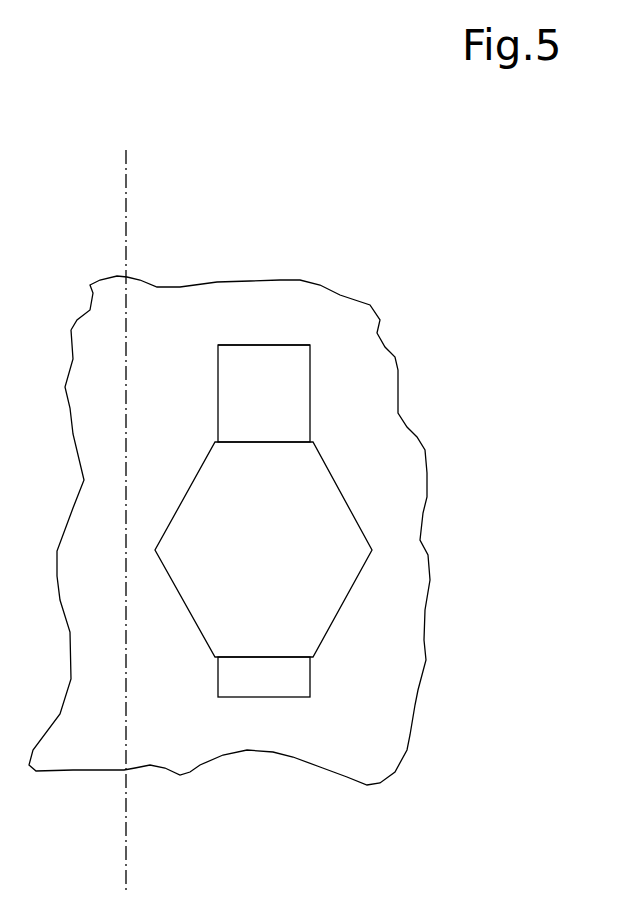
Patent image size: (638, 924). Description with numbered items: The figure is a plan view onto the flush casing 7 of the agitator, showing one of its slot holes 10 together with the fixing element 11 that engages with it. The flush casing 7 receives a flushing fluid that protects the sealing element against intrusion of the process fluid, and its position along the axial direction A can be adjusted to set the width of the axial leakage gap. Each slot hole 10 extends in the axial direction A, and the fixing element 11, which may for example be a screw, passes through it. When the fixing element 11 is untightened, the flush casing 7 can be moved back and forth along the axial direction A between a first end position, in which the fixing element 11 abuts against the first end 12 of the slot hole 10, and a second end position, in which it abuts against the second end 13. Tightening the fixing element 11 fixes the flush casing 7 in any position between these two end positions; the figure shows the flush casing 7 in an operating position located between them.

The axial direction A is at (128, 205).
The flush casing 7 is at (302, 279).
The slot hole 10 is at (314, 392).
The fixing element 11 is at (356, 511).
The first end of the slot hole 12 is at (297, 345).
The second end of the slot hole 13 is at (290, 697).